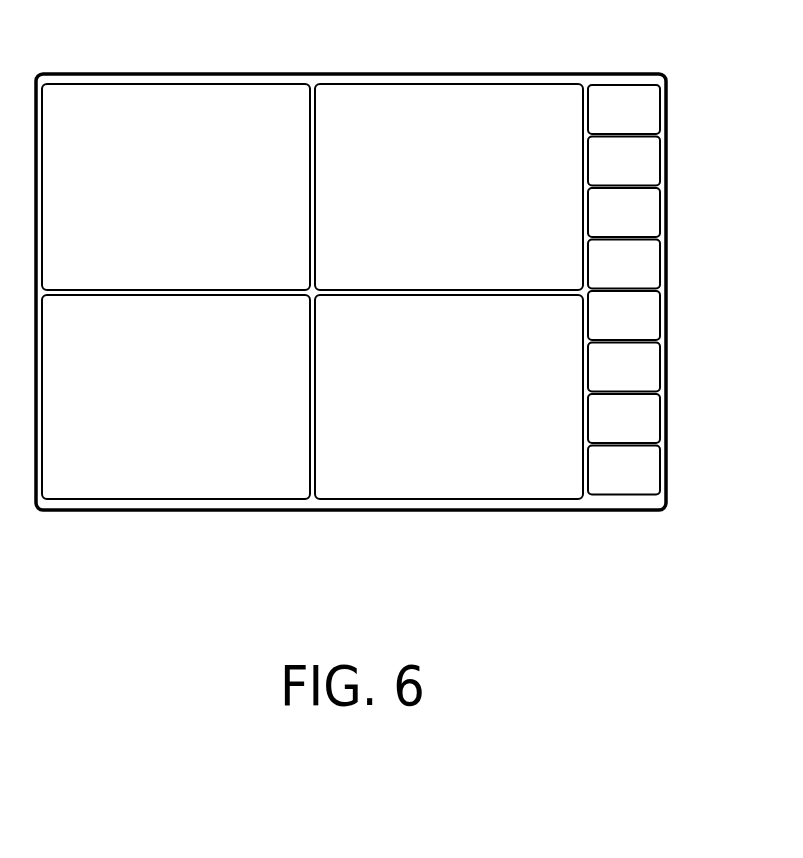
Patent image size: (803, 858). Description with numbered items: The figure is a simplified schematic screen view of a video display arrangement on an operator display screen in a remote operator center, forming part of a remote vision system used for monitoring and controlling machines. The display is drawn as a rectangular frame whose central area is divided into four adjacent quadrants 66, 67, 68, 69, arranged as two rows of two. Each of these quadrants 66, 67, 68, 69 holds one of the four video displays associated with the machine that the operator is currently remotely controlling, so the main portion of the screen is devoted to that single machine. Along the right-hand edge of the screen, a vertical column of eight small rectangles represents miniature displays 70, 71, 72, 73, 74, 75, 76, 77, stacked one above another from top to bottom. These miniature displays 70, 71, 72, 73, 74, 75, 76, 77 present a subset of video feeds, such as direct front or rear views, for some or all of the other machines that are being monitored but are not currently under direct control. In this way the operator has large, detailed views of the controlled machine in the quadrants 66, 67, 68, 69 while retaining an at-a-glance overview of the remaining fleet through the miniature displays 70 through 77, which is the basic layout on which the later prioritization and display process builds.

The quadrant 66 is at (170, 102).
The quadrant 67 is at (437, 102).
The quadrant 68 is at (160, 481).
The quadrant 69 is at (445, 481).
The miniature display 70 is at (652, 115).
The miniature display 71 is at (652, 166).
The miniature display 72 is at (652, 218).
The miniature display 73 is at (652, 270).
The miniature display 74 is at (652, 321).
The miniature display 75 is at (652, 372).
The miniature display 76 is at (652, 424).
The miniature display 77 is at (652, 476).